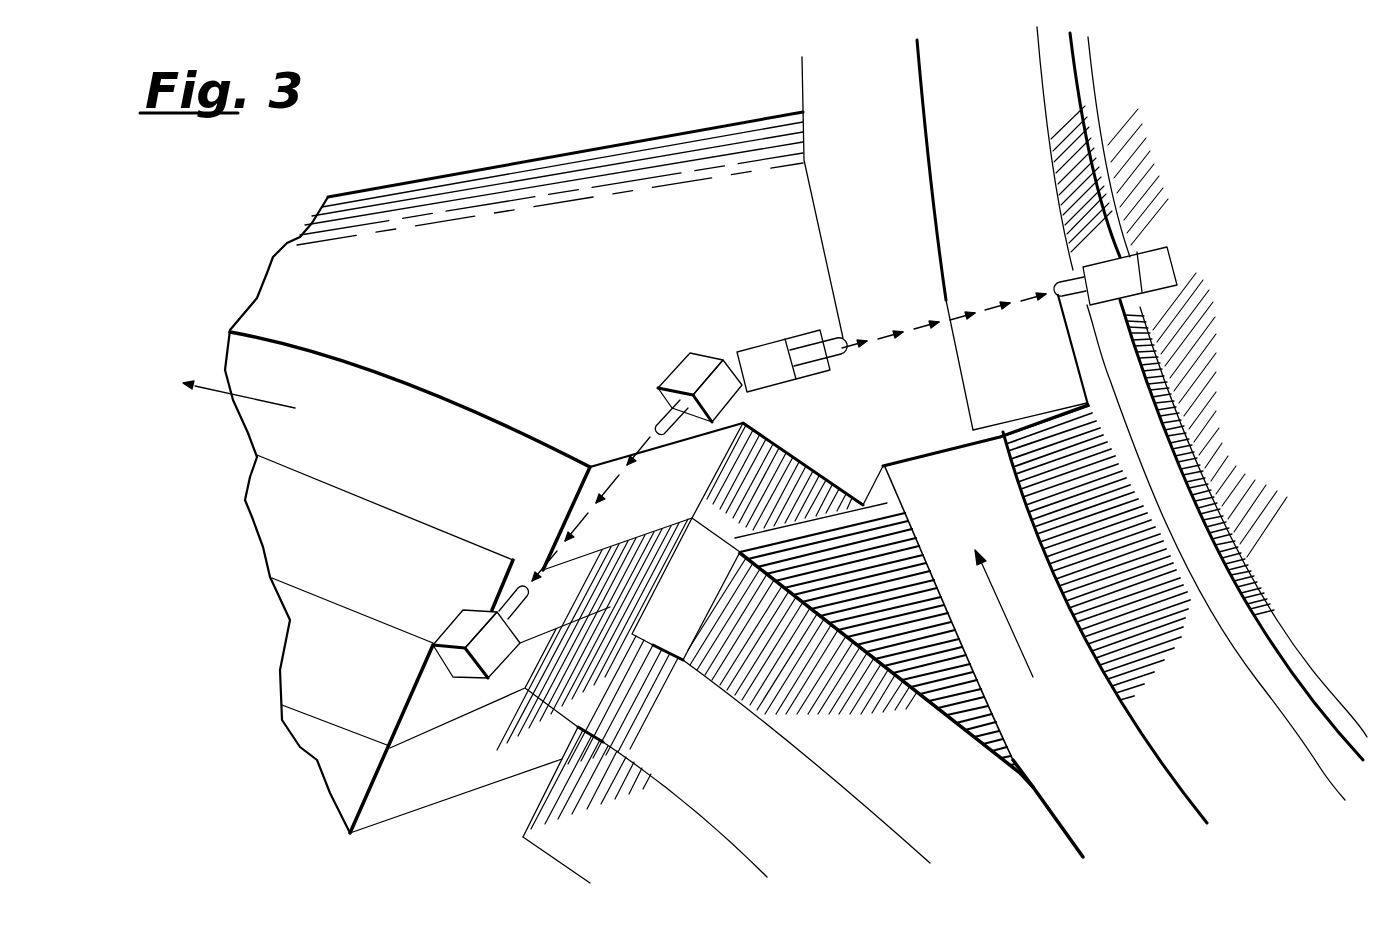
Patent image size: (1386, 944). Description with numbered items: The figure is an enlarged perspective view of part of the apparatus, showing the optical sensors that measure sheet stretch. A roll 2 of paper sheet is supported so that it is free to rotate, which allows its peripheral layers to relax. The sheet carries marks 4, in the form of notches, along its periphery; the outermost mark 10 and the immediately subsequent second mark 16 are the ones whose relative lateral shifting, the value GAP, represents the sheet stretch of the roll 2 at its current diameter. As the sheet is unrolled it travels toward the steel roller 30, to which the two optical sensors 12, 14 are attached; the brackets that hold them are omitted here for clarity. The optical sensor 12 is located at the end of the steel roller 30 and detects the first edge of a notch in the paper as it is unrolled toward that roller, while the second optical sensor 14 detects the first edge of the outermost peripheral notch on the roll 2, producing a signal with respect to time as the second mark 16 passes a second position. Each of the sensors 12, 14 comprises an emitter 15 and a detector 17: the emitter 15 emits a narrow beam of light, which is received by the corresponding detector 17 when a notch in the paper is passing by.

The roll 2 is at (434, 290).
The marks 4 is at (537, 752).
The mark 10 is at (1040, 364).
The optical sensor 12 is at (1165, 303).
The second optical sensor 14 is at (453, 613).
The emitter 15 is at (747, 355).
The second mark 16 is at (762, 502).
The detector 17 is at (448, 658).
The steel roller 30 is at (1367, 443).